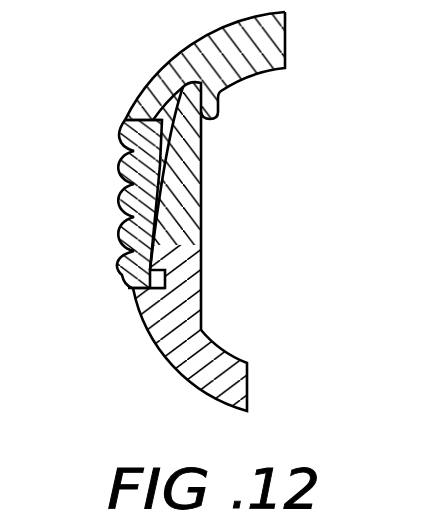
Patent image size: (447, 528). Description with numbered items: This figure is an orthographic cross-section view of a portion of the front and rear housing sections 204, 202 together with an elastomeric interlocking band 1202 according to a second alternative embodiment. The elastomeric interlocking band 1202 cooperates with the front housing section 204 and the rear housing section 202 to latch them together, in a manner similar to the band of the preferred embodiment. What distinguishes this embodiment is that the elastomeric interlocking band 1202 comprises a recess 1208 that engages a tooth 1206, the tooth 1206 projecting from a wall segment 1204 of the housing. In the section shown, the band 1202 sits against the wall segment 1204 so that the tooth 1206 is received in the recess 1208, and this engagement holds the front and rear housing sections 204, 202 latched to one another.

The rear housing section 202 is at (287, 31).
The front housing section 204 is at (248, 387).
The elastomeric interlocking band 1202 is at (105, 199).
The wall segment 1204 is at (201, 277).
The tooth 1206 is at (201, 228).
The recess 1208 is at (140, 232).